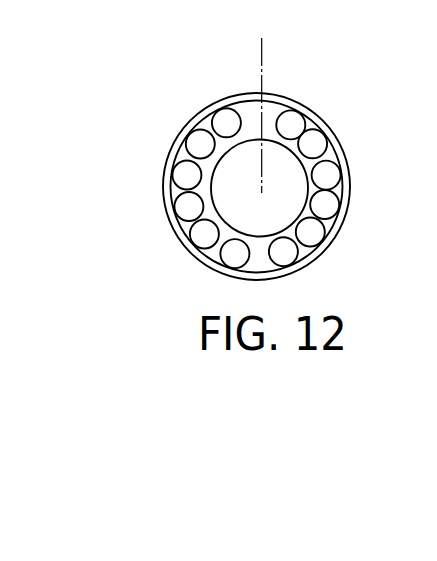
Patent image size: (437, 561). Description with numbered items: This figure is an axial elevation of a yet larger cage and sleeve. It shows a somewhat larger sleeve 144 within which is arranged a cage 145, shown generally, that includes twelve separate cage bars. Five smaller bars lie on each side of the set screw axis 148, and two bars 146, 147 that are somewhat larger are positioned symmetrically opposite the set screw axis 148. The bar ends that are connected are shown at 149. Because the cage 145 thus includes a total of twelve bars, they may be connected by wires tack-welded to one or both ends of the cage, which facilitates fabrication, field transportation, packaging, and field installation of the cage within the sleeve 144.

The sleeve 144 is at (324, 110).
The cage 145 is at (318, 141).
The cage bar 146 is at (233, 253).
The cage bar 147 is at (287, 253).
The set screw axis 148 is at (262, 68).
The bar ends 149 is at (225, 180).